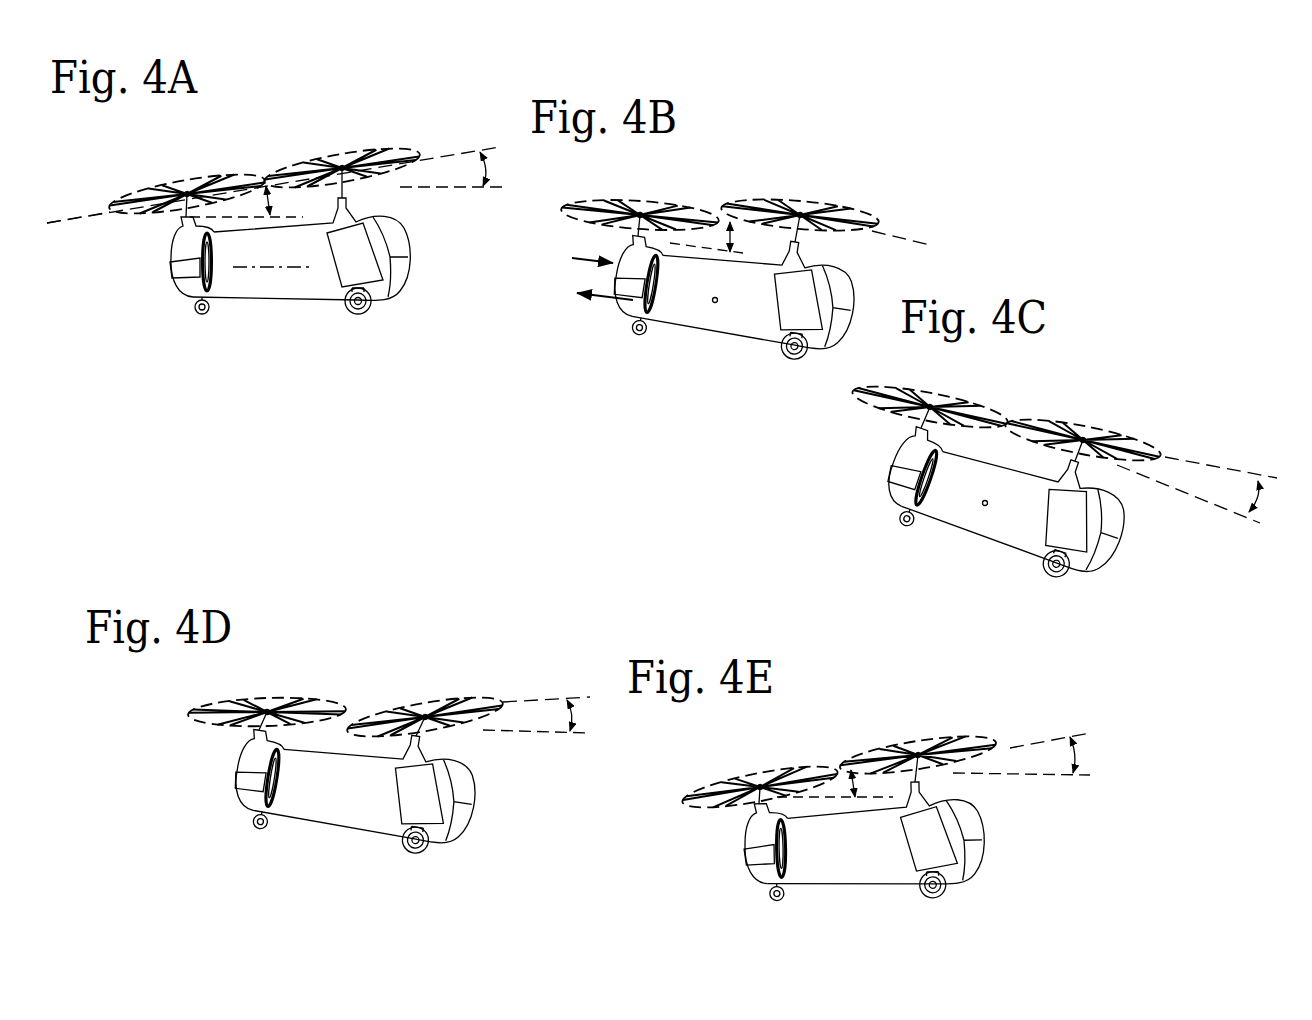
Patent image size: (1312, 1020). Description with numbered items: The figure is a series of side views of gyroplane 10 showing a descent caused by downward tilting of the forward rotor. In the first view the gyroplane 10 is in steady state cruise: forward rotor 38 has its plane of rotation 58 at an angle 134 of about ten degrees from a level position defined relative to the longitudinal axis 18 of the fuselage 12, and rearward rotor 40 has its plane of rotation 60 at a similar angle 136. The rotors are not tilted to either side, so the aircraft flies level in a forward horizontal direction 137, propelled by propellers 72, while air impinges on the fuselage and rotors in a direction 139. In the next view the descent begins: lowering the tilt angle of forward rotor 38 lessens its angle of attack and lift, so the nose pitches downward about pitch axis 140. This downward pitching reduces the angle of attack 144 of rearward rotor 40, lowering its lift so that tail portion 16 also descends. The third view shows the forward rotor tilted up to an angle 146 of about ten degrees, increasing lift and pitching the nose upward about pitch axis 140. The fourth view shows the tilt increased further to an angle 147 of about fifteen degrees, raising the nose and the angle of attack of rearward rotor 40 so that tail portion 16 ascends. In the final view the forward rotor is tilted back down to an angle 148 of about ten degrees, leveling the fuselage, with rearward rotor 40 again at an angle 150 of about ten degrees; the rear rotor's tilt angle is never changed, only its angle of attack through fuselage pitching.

In FIG. 4A, the gyroplane 10 is at (352, 89).
In FIG. 4B, the gyroplane 10 is at (875, 148).
In FIG. 4A, the fuselage 12 is at (312, 309).
In FIG. 4B, the fuselage 12 is at (745, 293).
In FIG. 4C, the fuselage 12 is at (1017, 503).
In FIG. 4D, the fuselage 12 is at (338, 840).
In FIG. 4E, the fuselage 12 is at (852, 892).
In FIG. 4A, the tail portion 16 is at (192, 257).
In FIG. 4B, the tail portion 16 is at (622, 323).
In FIG. 4C, the tail portion 16 is at (885, 497).
In FIG. 4D, the tail portion 16 is at (235, 760).
In FIG. 4E, the tail portion 16 is at (737, 838).
In FIG. 4A, the longitudinal axis 18 is at (273, 268).
In FIG. 4A, the forward rotor 38 is at (333, 150).
In FIG. 4B, the forward rotor 38 is at (797, 188).
In FIG. 4C, the forward rotor 38 is at (1085, 415).
In FIG. 4D, the forward rotor 38 is at (418, 693).
In FIG. 4E, the forward rotor 38 is at (910, 738).
In FIG. 4A, the rearward rotor 40 is at (178, 178).
In FIG. 4B, the rearward rotor 40 is at (637, 190).
In FIG. 4C, the rearward rotor 40 is at (967, 390).
In FIG. 4D, the rearward rotor 40 is at (262, 688).
In FIG. 4E, the rearward rotor 40 is at (753, 763).
In FIG. 4A, the plane of rotation 58 is at (463, 150).
In FIG. 4B, the plane of rotation 58 is at (907, 233).
In FIG. 4C, the plane of rotation 58 is at (1223, 463).
In FIG. 4D, the plane of rotation 58 is at (530, 700).
In FIG. 4E, the plane of rotation 58 is at (1032, 740).
In FIG. 4A, the plane of rotation 60 is at (70, 217).
In FIG. 4E, the plane of rotation 60 is at (857, 757).
In FIG. 4A, the propellers 72 is at (197, 283).
In FIG. 4B, the propellers 72 is at (651, 284).
In FIG. 4C, the propellers 72 is at (928, 493).
In FIG. 4D, the propellers 72 is at (277, 800).
In FIG. 4E, the propellers 72 is at (788, 867).
In FIG. 4A, the angle 134 is at (483, 170).
In FIG. 4A, the angle 136 is at (272, 199).
In FIG. 4B, the forward, horizontal direction 137 is at (590, 257).
In FIG. 4B, the direction 139 is at (607, 300).
In FIG. 4B, the pitch axis 140 is at (716, 303).
In FIG. 4C, the pitch axis 140 is at (986, 506).
In FIG. 4B, the angle of attack 144 is at (733, 240).
In FIG. 4C, the angle 146 is at (1267, 500).
In FIG. 4D, the angle 147 is at (570, 713).
In FIG. 4E, the angle 148 is at (1077, 757).
In FIG. 4E, the angle 150 is at (860, 783).